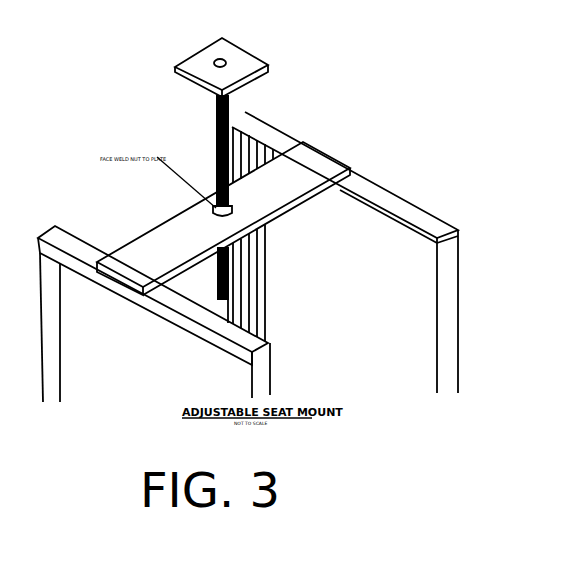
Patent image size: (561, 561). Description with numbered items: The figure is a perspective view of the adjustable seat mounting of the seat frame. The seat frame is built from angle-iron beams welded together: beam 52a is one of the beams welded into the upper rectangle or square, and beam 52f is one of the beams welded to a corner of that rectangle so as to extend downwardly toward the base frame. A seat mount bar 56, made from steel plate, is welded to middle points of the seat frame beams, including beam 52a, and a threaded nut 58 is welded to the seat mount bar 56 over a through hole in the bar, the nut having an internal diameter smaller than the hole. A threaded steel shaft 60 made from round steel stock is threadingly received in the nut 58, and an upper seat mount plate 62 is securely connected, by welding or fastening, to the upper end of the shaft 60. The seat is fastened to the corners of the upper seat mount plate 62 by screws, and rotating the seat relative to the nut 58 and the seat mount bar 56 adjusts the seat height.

The upper seat mount plate 62 is at (242, 60).
The threaded steel shaft 60 is at (217, 137).
The threaded nut 58 is at (222, 216).
The seat mount bar 56 is at (312, 160).
The beam 52f is at (50, 360).
The beam 52a is at (185, 323).